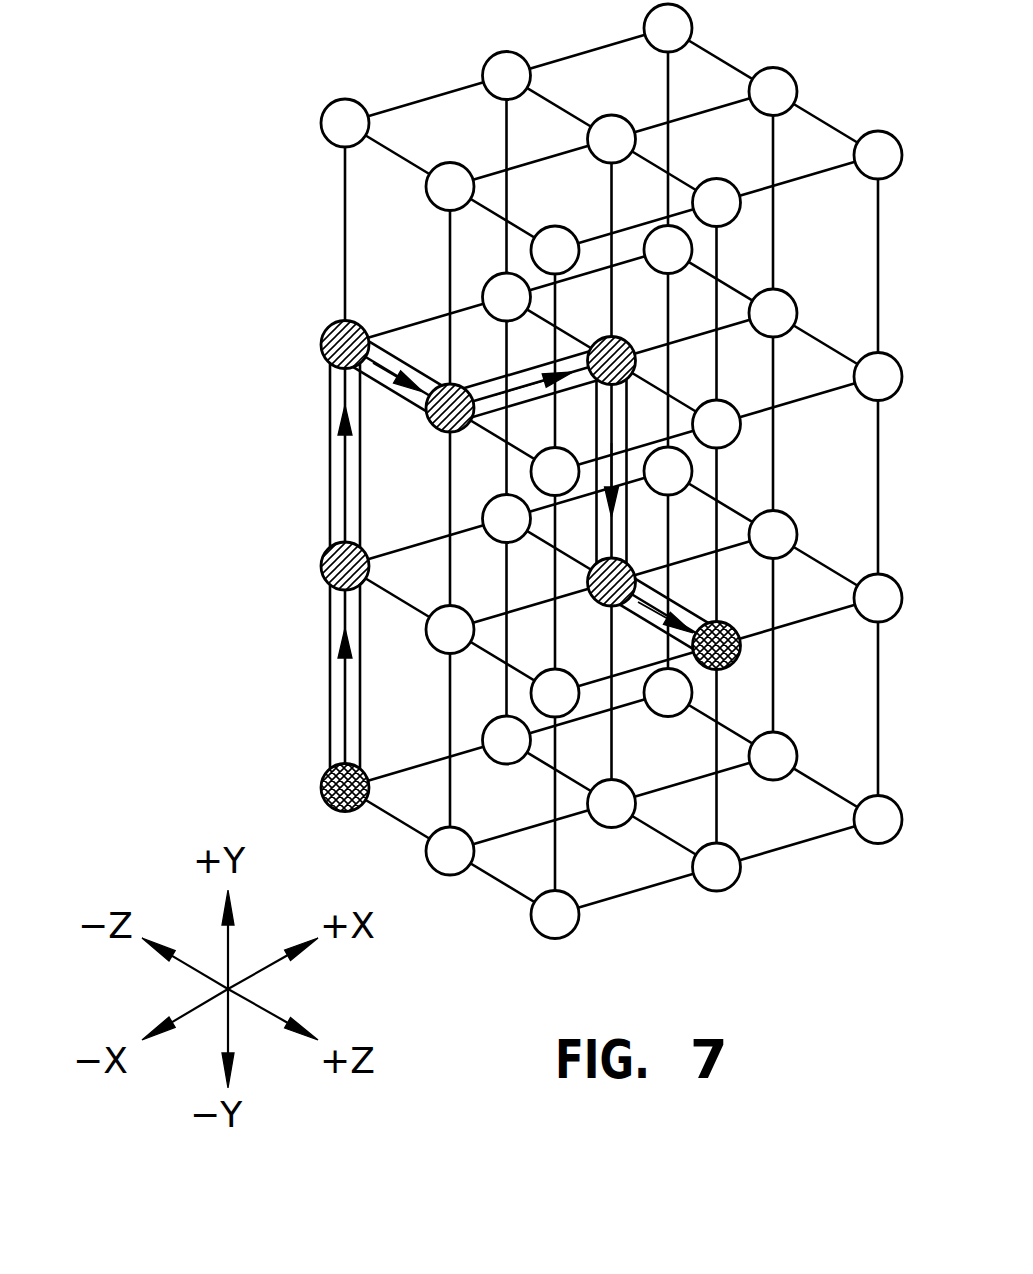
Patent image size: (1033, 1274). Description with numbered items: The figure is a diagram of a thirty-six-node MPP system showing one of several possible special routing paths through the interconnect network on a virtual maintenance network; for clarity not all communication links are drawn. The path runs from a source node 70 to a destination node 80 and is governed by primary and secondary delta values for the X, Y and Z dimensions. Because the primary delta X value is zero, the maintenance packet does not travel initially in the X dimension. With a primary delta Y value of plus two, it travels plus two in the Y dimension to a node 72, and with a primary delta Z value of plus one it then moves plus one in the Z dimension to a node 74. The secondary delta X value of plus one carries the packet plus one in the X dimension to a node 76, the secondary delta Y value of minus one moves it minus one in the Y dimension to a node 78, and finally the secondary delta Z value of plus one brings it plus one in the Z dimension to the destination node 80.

The source node 70 is at (322, 776).
The node 72 is at (323, 551).
The node 74 is at (448, 384).
The node 76 is at (627, 338).
The node 78 is at (597, 606).
The destination node 80 is at (738, 664).